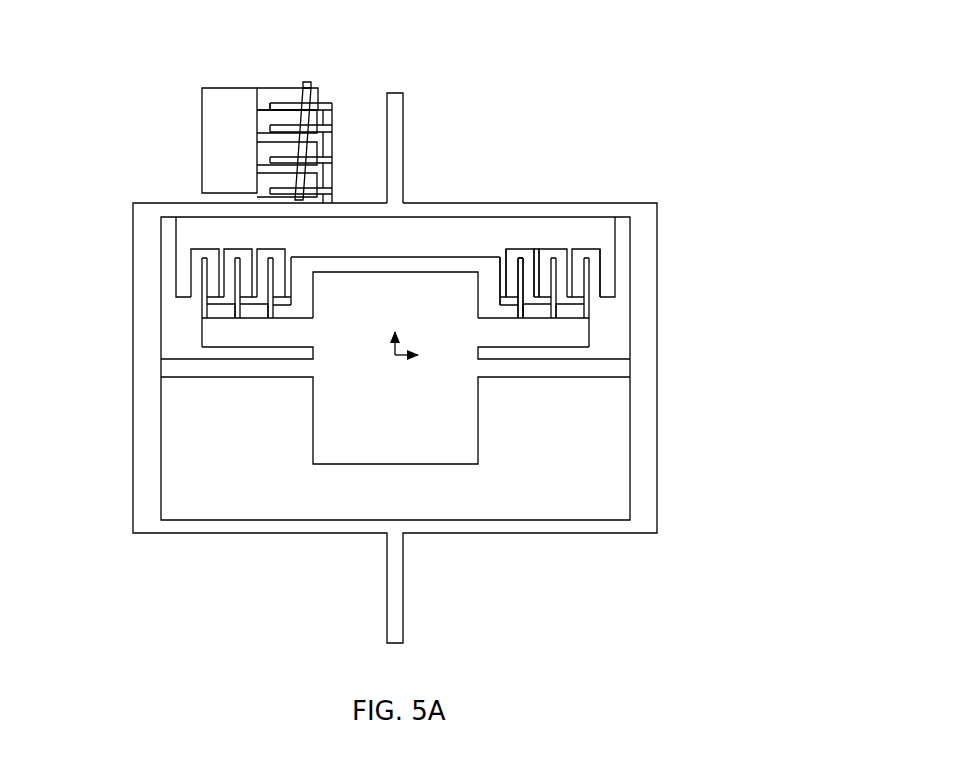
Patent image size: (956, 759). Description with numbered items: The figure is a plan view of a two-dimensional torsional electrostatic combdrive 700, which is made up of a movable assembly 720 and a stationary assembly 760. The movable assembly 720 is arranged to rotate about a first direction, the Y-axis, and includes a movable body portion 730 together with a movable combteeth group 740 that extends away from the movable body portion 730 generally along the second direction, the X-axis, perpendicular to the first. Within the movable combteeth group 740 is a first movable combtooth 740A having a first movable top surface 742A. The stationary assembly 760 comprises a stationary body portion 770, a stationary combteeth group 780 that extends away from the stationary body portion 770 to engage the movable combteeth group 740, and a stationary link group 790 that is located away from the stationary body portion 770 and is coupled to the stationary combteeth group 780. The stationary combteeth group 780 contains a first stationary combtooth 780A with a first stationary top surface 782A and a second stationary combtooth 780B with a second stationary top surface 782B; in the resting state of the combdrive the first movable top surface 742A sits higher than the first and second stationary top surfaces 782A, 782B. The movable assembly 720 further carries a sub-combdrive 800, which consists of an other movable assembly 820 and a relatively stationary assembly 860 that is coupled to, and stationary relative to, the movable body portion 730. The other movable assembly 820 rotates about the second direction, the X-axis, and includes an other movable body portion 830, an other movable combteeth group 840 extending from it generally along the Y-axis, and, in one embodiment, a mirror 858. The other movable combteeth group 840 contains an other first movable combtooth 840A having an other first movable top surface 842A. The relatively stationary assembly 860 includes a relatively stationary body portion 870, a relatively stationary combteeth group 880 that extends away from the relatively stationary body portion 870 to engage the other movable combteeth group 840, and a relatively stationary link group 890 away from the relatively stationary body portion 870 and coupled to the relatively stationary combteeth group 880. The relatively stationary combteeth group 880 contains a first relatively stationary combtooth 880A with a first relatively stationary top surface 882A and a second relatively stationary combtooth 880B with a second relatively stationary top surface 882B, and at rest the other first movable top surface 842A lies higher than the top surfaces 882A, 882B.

The torsional electrostatic combdrive 700 is at (762, 145).
The movable assembly 720 is at (520, 133).
The movable body portion 730 is at (352, 185).
The movable combteeth group 740 is at (228, 103).
The first movable combtooth 740A is at (271, 100).
The first movable top surface 742A is at (283, 100).
The stationary assembly 760 is at (188, 92).
The stationary body portion 770 is at (252, 121).
The stationary combteeth group 780 is at (191, 138).
The first stationary combtooth 780A is at (291, 82).
The second stationary combtooth 780B is at (271, 136).
The first stationary top surface 782A is at (312, 97).
The second stationary top surface 782B is at (267, 125).
The stationary link group 790 is at (297, 167).
The sub-combdrive 800 is at (182, 322).
The other movable assembly 820 is at (604, 341).
The other movable body portion 830 is at (194, 347).
The other movable combteeth group 840 is at (194, 308).
The other first movable combtooth 840A is at (524, 315).
The other first movable top surface 842A is at (520, 313).
The mirror 858 is at (416, 407).
The relatively stationary assembly 860 is at (428, 245).
The relatively stationary body portion 870 is at (416, 250).
The relatively stationary combteeth group 880 is at (587, 211).
The first relatively stationary combtooth 880A is at (496, 283).
The second relatively stationary combtooth 880B is at (548, 256).
The first relatively stationary top surface 882A is at (504, 256).
The second relatively stationary top surface 882B is at (537, 250).
The relatively stationary link group 890 is at (600, 311).